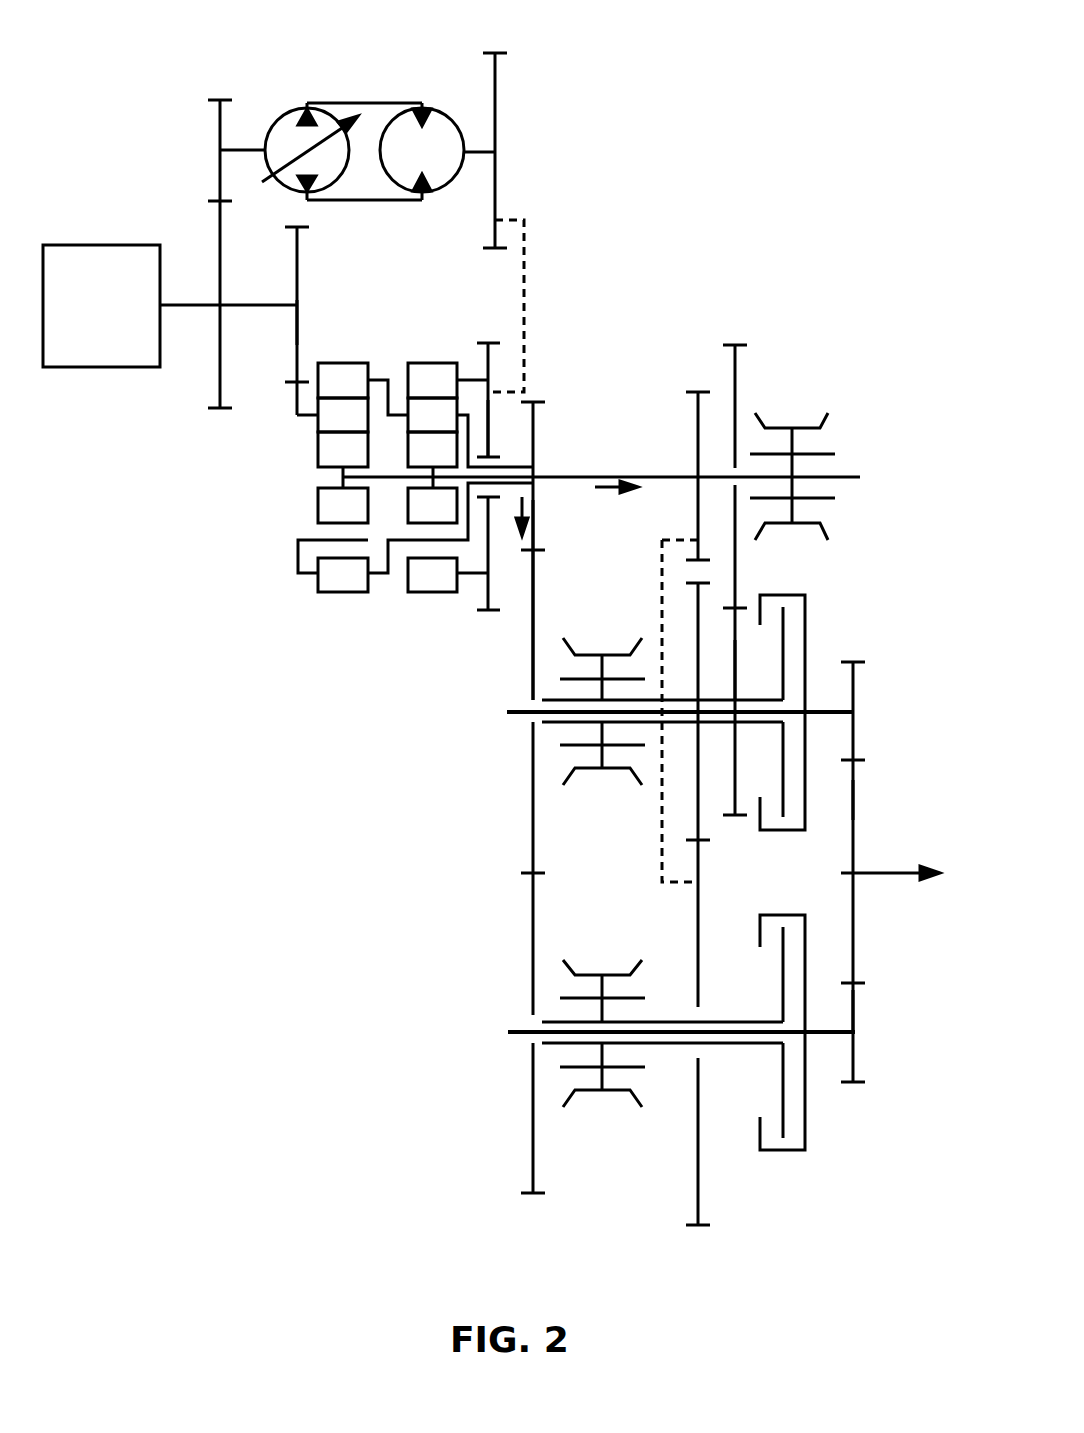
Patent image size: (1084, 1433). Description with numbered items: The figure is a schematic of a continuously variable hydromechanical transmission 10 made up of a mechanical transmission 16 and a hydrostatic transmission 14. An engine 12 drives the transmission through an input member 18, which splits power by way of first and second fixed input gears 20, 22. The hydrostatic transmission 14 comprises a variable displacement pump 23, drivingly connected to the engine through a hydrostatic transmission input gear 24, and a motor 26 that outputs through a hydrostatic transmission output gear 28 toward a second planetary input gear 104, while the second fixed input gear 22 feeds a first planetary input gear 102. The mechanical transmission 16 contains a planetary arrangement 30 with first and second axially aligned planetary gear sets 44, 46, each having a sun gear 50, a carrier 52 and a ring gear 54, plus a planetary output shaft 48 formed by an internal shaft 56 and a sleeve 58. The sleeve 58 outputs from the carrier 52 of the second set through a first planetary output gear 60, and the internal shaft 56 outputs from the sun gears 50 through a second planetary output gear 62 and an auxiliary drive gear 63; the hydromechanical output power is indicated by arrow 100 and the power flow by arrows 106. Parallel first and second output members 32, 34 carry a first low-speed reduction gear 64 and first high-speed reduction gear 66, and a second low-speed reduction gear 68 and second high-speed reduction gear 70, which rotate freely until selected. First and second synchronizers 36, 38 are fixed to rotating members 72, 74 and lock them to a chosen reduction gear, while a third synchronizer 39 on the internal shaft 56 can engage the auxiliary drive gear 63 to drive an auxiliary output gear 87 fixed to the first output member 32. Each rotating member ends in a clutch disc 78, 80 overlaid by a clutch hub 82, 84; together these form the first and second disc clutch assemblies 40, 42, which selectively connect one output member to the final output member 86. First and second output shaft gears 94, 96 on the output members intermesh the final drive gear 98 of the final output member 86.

The hydromechanical transmission 10 is at (663, 145).
The engine 12 is at (170, 306).
The hydrostatic transmission 14 is at (362, 84).
The mechanical transmission 16 is at (424, 848).
The input member 18 is at (296, 303).
The first fixed input gear 20 is at (217, 368).
The second fixed input gear 22 is at (300, 332).
The variable displacement pump 23 is at (292, 118).
The hydrostatic transmission input gear 24 is at (217, 112).
The motor 26 is at (440, 108).
The hydrostatic transmission output gear 28 is at (498, 92).
The planetary arrangement 30 is at (399, 524).
The first output member 32 is at (508, 712).
The second output member 34 is at (512, 1031).
The first synchronizer 36 is at (600, 770).
The second synchronizer 38 is at (615, 972).
The third synchronizer 39 is at (790, 427).
The first disc clutch assembly 40 is at (826, 669).
The second disc clutch assembly 42 is at (828, 1066).
The first planetary gear set 44 is at (318, 580).
The second planetary gear set 46 is at (410, 585).
The planetary output shaft 48 is at (664, 366).
The sun gear 50 is at (343, 460).
The carrier 52 is at (343, 415).
The ring gear 54 is at (363, 389).
The internal shaft 56 is at (618, 476).
The sleeve 58 is at (532, 465).
The first planetary output gear 60 is at (534, 403).
The second planetary output gear 62 is at (697, 425).
The auxiliary drive gear 63 is at (737, 368).
The first low-speed reduction gear 64 is at (532, 622).
The first high-speed reduction gear 66 is at (697, 612).
The second low-speed reduction gear 68 is at (532, 1138).
The second high-speed reduction gear 70 is at (697, 1120).
The first rotating member 72 is at (596, 723).
The second rotating member 74 is at (775, 1020).
The clutch disc 78 is at (816, 578).
The clutch disc 80 is at (787, 948).
The clutch hub 82 is at (760, 593).
The clutch hub 84 is at (806, 1120).
The final output member 86 is at (896, 873).
The auxiliary output gear 87 is at (737, 682).
The first output shaft gear 94 is at (854, 661).
The second output shaft gear 96 is at (855, 1013).
The final drive gear 98 is at (855, 805).
The arrow 100 is at (608, 490).
The first planetary input gear 102 is at (296, 415).
The second planetary input gear 104 is at (486, 345).
The arrows 106 is at (536, 540).